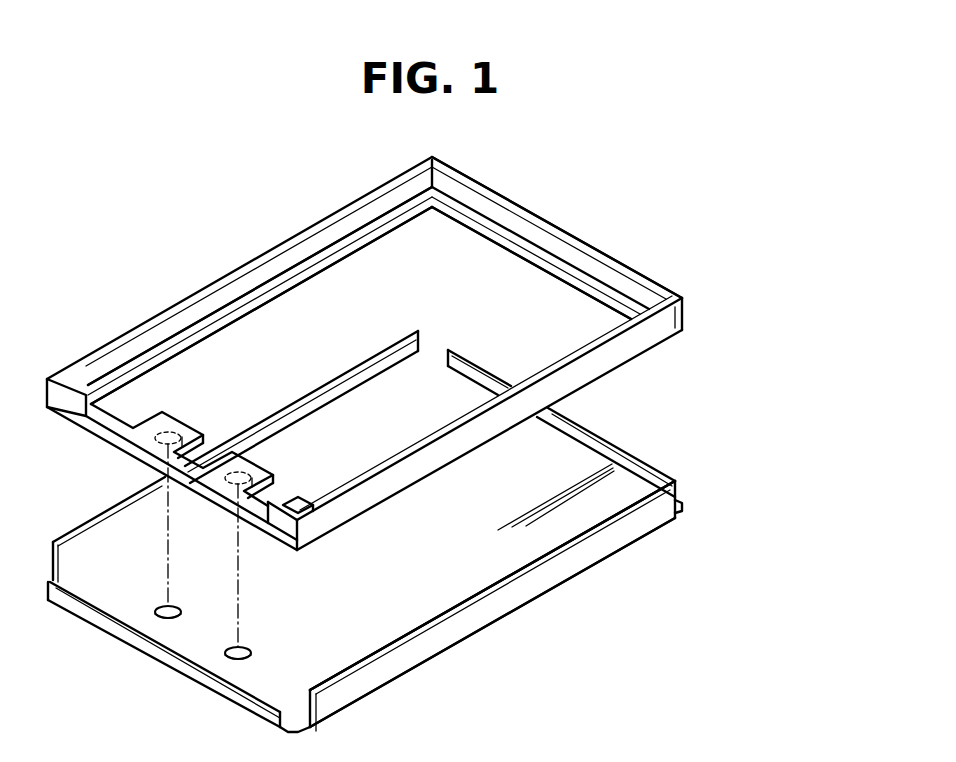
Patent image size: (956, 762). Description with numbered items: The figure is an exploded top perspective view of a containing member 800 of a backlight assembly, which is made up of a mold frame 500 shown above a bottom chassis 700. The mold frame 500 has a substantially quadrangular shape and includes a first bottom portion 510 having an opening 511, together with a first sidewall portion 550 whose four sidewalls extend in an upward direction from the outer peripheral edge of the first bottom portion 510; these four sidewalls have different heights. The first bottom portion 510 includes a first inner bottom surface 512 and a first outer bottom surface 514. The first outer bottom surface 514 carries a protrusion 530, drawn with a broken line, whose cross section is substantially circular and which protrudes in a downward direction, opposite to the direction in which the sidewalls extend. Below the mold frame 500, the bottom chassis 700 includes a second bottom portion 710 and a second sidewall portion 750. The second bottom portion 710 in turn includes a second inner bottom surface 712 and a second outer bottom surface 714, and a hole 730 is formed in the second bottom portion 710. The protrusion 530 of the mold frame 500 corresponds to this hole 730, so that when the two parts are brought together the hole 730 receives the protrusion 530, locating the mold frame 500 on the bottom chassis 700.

The containing member 800 is at (174, 186).
The mold frame 500 is at (708, 313).
The first bottom portion 510 is at (436, 266).
The opening 511 is at (565, 306).
The first inner bottom surface 512 is at (322, 260).
The first outer bottom surface 514 is at (302, 295).
The protrusion 530 is at (167, 436).
The first sidewall portion 550 is at (562, 252).
The bottom chassis 700 is at (708, 490).
The second bottom portion 710 is at (584, 639).
The second inner bottom surface 712 is at (455, 588).
The second outer bottom surface 714 is at (452, 650).
The hole 730 is at (227, 655).
The second sidewall portion 750 is at (570, 563).